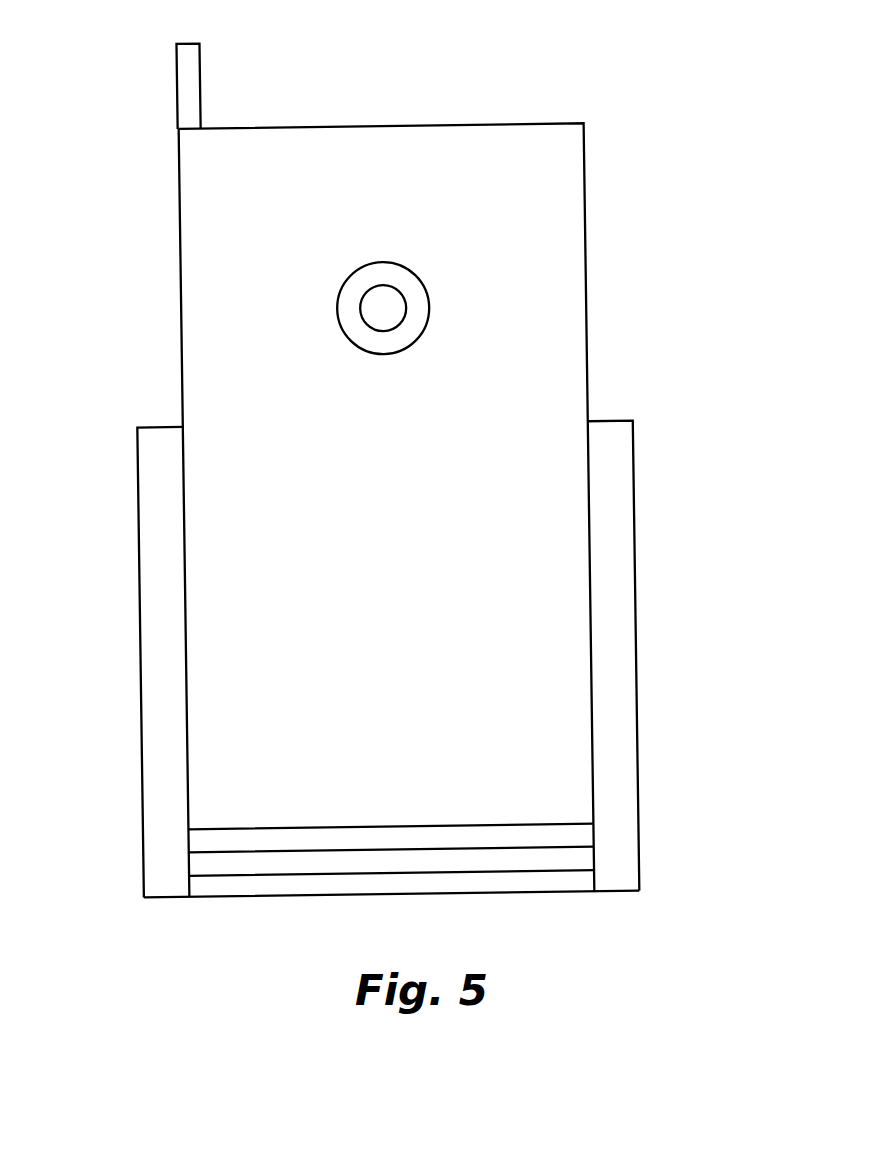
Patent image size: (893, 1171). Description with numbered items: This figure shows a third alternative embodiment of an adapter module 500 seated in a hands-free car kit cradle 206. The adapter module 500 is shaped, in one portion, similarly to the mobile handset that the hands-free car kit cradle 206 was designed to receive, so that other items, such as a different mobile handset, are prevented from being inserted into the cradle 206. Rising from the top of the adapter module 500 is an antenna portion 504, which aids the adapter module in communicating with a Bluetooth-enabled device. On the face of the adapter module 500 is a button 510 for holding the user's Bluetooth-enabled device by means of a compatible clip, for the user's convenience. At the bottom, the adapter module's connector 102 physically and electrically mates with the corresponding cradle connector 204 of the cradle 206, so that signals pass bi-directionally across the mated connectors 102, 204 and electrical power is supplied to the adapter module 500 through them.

The adapter module 500 is at (584, 160).
The antenna portion 504 is at (177, 72).
The button 510 is at (338, 305).
The cradle connector 204 is at (190, 888).
The hands-free car kit cradle 206 is at (633, 462).
The connector 102 is at (593, 832).